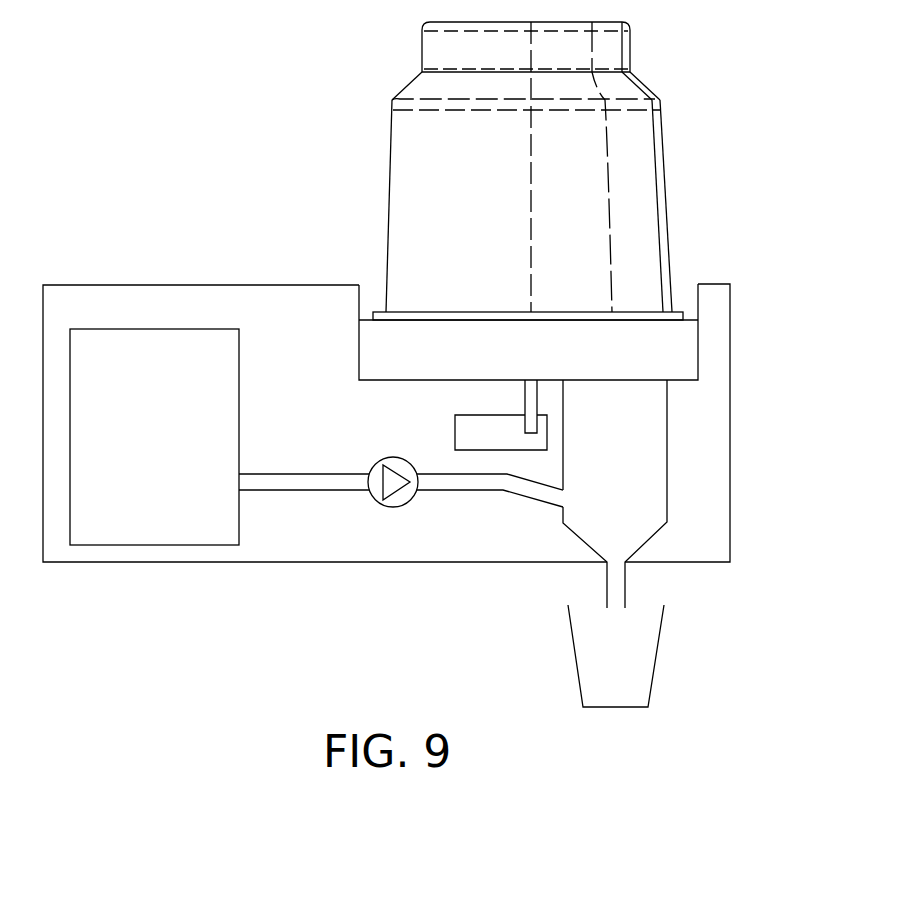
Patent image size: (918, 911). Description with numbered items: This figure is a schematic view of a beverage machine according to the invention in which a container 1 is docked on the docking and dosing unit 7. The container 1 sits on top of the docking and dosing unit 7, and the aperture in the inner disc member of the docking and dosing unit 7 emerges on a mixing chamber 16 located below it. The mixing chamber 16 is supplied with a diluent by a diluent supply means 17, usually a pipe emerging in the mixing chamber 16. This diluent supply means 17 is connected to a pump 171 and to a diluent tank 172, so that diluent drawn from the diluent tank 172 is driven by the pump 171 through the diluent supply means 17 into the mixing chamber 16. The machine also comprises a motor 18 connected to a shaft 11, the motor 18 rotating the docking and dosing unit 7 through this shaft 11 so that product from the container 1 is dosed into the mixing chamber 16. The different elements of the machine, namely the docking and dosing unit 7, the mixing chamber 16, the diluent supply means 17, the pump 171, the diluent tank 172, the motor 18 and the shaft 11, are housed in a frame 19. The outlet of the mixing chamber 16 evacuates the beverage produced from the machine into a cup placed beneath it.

The container 1 is at (673, 72).
The docking and dosing unit 7 is at (674, 357).
The shaft 11 is at (525, 392).
The mixing chamber 16 is at (652, 476).
The diluent supply means 17 is at (545, 514).
The motor 18 is at (455, 431).
The frame 19 is at (203, 295).
The pump 171 is at (395, 500).
The diluent tank 172 is at (152, 545).